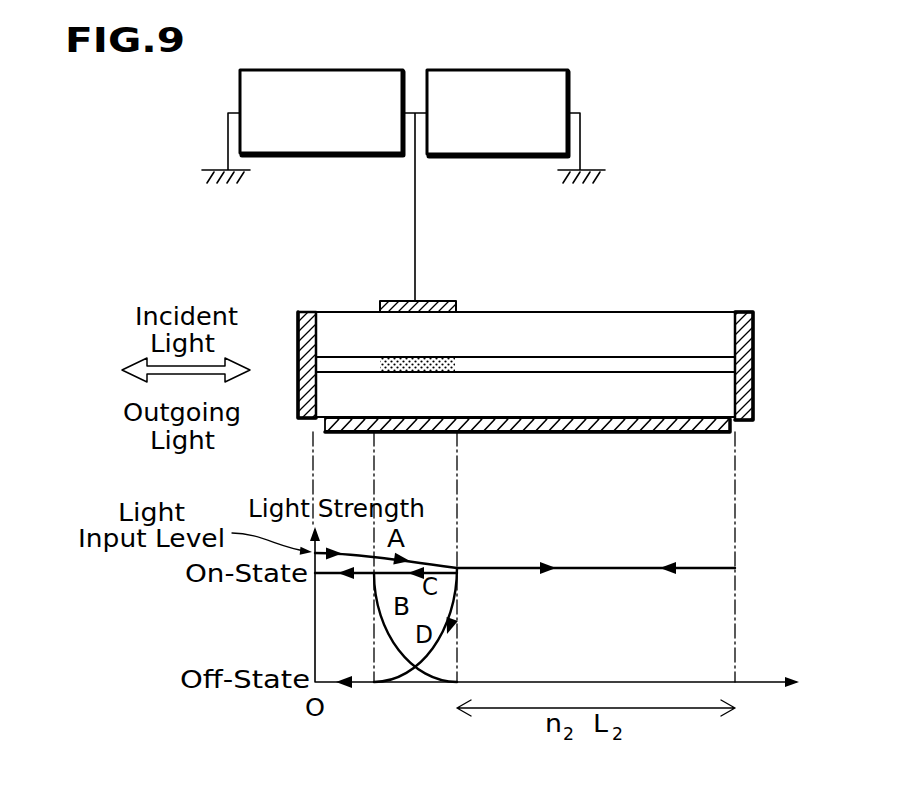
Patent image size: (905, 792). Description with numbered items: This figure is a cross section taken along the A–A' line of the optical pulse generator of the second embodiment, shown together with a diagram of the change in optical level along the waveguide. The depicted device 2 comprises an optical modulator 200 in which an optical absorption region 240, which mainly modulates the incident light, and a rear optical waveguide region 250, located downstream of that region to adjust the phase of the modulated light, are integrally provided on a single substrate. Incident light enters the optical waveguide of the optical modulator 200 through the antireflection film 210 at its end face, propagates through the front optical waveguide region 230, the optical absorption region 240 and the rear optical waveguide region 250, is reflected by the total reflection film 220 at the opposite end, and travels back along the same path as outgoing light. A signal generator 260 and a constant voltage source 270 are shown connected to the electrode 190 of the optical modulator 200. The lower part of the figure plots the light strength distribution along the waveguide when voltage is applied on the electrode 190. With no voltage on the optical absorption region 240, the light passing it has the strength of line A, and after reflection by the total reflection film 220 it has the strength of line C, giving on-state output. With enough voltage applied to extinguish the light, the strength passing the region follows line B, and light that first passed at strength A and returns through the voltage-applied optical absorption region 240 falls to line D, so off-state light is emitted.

The optical modulation device 2 is at (510, 220).
The electrode 190 is at (466, 299).
The optical modulator 200 is at (510, 320).
The antireflection film 210 is at (243, 336).
The total reflection film 220 is at (792, 375).
The front optical waveguide region 230 is at (325, 267).
The optical absorption region 240 is at (397, 297).
The rear optical waveguide region 250 is at (596, 267).
The signal generator 260 is at (302, 102).
The constant voltage source 270 is at (516, 102).